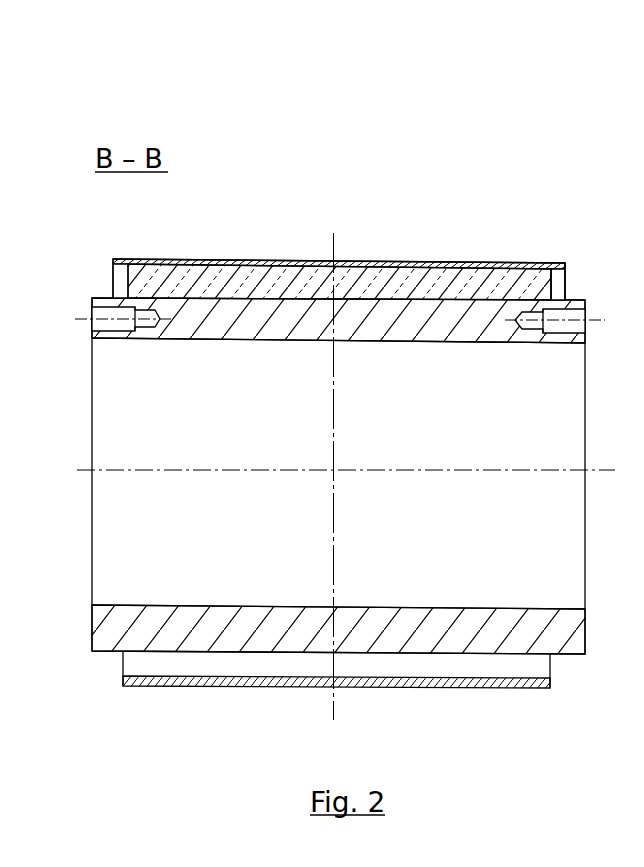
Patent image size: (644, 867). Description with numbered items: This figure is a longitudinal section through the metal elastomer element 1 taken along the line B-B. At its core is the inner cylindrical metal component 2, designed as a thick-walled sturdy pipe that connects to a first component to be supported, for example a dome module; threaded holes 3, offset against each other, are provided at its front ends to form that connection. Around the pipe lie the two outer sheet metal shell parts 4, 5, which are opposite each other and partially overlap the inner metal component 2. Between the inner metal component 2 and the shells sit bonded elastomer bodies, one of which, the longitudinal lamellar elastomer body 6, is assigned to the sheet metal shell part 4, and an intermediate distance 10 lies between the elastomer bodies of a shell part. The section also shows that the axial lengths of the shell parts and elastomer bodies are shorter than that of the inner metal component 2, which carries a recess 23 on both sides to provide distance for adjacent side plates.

The metal elastomer element 1 is at (456, 134).
The inner cylindrical metal component 2 is at (227, 623).
The threaded holes 3 is at (92, 308).
The sheet metal shell part 4 is at (457, 688).
The sheet metal shell part 5 is at (380, 268).
The elastomer body 6 is at (257, 283).
The intermediate distance 10 is at (152, 663).
The recess 23 is at (573, 282).